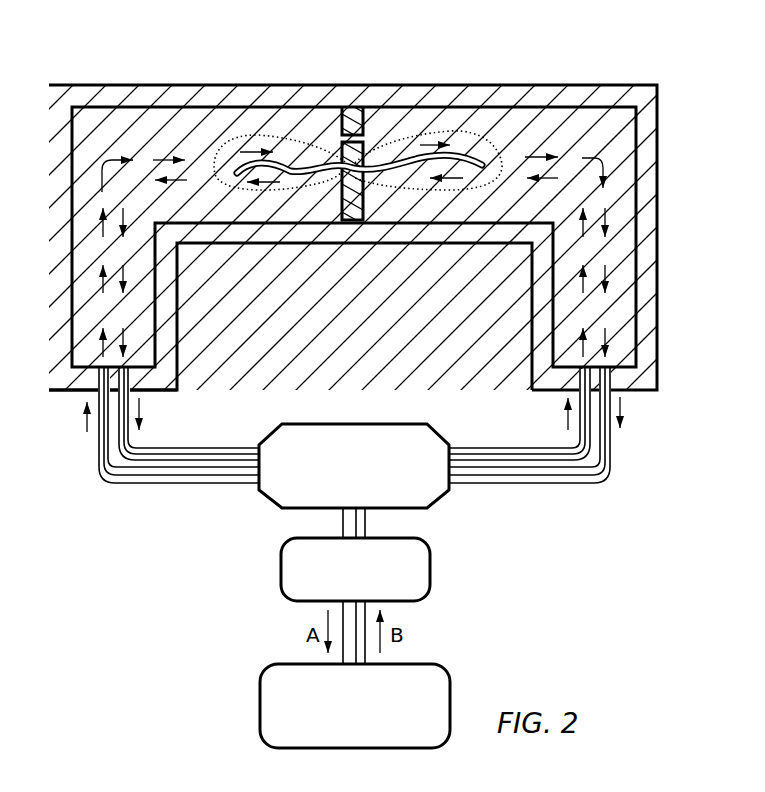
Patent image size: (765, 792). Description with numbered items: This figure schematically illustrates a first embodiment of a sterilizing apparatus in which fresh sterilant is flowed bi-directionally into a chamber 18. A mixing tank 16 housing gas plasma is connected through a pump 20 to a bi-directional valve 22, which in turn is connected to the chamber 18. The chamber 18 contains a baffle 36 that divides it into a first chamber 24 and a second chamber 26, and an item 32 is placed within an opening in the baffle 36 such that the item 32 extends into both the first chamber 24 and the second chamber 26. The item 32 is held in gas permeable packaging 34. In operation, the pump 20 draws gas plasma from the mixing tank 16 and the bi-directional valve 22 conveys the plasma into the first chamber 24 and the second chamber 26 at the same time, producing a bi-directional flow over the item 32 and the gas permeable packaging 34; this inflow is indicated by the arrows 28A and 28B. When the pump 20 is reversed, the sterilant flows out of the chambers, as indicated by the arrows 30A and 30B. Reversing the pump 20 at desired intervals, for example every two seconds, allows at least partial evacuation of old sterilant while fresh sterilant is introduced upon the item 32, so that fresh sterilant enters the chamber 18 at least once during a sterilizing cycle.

The mixing tank 16 is at (260, 708).
The chamber 18 is at (256, 84).
The pump 20 is at (430, 563).
The bi-directional valve 22 is at (348, 424).
The first chamber 24 is at (113, 148).
The second chamber 26 is at (616, 146).
The inflow arrow 28A is at (240, 493).
The inflow arrow 28B is at (515, 440).
The outflow arrow 30A is at (240, 440).
The outflow arrow 30B is at (485, 492).
The item 32 is at (462, 156).
The gas permeable packaging 34 is at (237, 140).
The baffle 36 is at (344, 152).